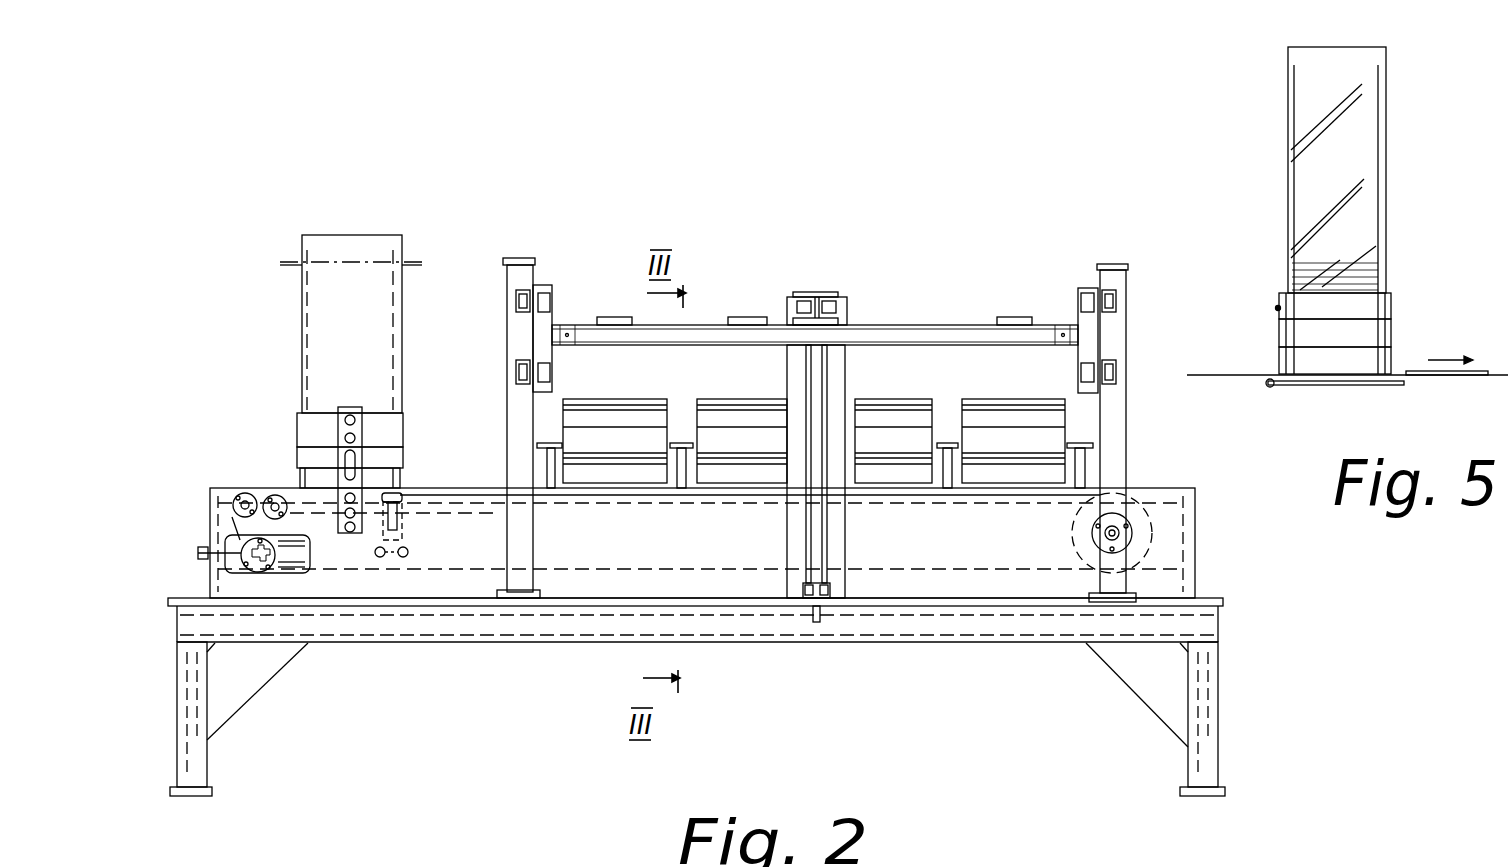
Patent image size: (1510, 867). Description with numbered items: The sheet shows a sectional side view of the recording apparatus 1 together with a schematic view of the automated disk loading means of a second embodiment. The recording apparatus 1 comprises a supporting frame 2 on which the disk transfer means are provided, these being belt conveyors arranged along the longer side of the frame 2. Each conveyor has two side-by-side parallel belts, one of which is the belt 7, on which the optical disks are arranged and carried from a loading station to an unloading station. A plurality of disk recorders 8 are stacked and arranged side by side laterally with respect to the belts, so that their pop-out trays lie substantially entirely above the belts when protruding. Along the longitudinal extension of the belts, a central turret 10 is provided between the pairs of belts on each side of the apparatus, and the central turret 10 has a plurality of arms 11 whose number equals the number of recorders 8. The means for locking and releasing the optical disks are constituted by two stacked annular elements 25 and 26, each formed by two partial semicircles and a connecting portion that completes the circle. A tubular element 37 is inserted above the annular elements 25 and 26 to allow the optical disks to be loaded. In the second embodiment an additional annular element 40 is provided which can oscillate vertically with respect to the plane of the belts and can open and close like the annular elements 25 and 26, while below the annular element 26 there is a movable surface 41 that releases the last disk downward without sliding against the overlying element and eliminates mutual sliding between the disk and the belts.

In FIG. 2, the recording apparatus 1 is at (862, 245).
In FIG. 2, the supporting frame 2 is at (919, 642).
In FIG. 2, the belt 7 is at (442, 487).
In FIG. 2, the disk recorder 8 is at (596, 408).
In FIG. 2, the central turret 10 is at (834, 372).
In FIG. 2, the arm 11 is at (610, 317).
In FIG. 2, the annular element 25 is at (303, 453).
In FIG. 5, the annular element 25 is at (1380, 338).
In FIG. 2, the annular element 26 is at (305, 478).
In FIG. 5, the annular element 26 is at (1292, 360).
In FIG. 2, the tubular element 37 is at (323, 288).
In FIG. 5, the tubular element 37 is at (1305, 84).
In FIG. 5, the additional annular element 40 is at (1278, 308).
In FIG. 5, the surface 41 is at (1299, 388).